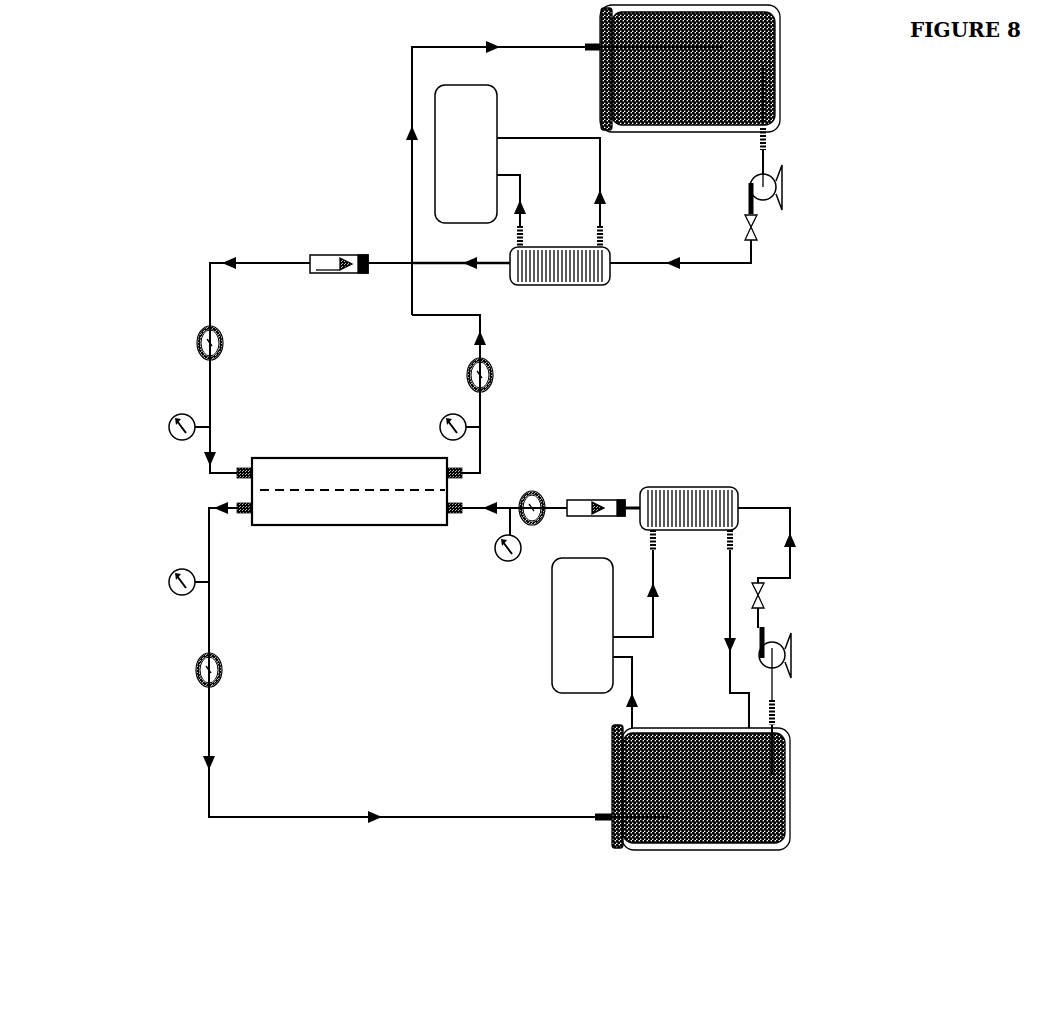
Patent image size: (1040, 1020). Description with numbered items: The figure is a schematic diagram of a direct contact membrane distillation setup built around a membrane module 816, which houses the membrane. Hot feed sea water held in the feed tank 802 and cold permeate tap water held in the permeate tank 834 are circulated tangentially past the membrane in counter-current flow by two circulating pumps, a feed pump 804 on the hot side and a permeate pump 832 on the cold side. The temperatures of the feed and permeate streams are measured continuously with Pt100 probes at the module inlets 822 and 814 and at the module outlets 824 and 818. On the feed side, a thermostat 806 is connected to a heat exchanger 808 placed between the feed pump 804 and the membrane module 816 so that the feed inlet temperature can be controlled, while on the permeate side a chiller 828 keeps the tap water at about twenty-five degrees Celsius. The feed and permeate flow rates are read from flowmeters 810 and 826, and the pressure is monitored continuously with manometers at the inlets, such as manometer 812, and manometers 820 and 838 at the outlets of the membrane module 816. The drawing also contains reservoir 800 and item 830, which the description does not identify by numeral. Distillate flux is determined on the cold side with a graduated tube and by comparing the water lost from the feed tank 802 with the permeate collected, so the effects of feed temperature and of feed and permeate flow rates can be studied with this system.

The second reservoir tank 800 is at (692, 787).
The feed tank 802 is at (383, 662).
The feed pump 804 is at (373, 534).
The thermostat 806 is at (349, 491).
The heat exchanger 808 is at (634, 639).
The flowmeter 810 is at (514, 526).
The manometer 812 is at (324, 416).
The inlet 814 is at (481, 394).
The membrane module 816 is at (406, 239).
The outlet 818 is at (253, 264).
The outlet manometer 820 is at (495, 177).
The inlet 822 is at (682, 77).
The outlet 824 is at (543, 221).
The flowmeter 826 is at (781, 191).
The chiller 828 is at (652, 496).
The valve 830 is at (723, 290).
The permeate pump 832 is at (789, 676).
The permeate tank 834 is at (837, 605).
The outlet manometer 838 is at (560, 276).